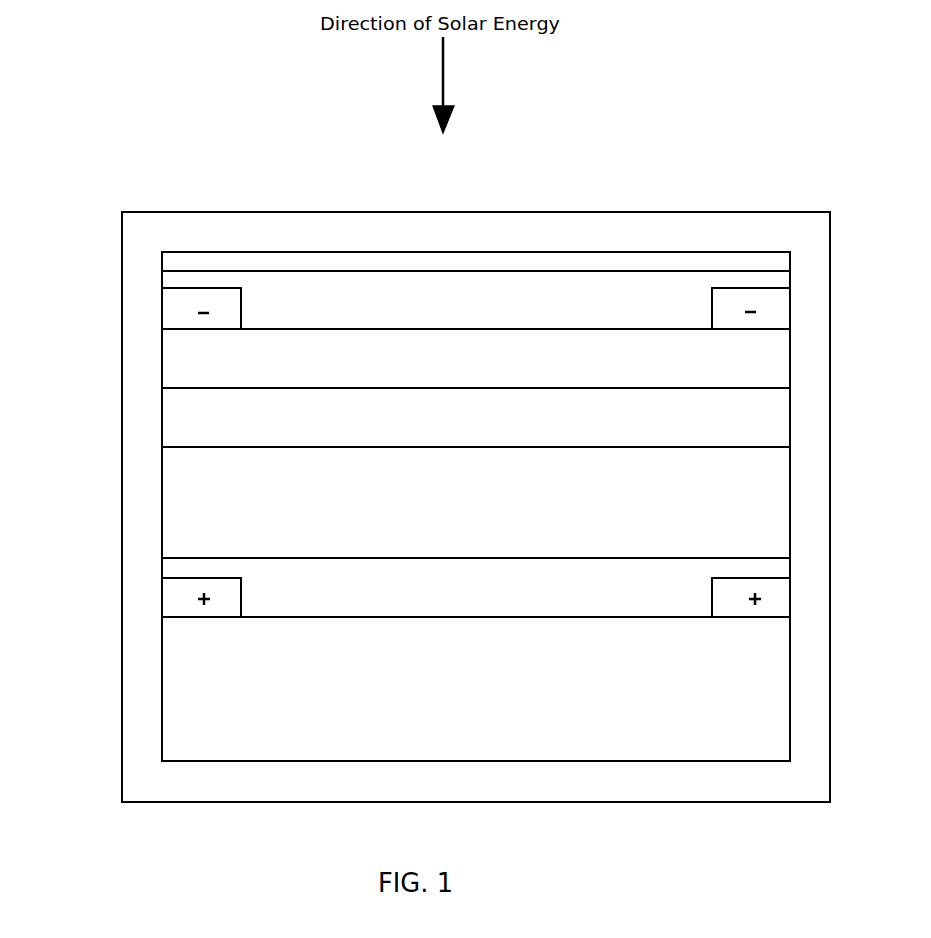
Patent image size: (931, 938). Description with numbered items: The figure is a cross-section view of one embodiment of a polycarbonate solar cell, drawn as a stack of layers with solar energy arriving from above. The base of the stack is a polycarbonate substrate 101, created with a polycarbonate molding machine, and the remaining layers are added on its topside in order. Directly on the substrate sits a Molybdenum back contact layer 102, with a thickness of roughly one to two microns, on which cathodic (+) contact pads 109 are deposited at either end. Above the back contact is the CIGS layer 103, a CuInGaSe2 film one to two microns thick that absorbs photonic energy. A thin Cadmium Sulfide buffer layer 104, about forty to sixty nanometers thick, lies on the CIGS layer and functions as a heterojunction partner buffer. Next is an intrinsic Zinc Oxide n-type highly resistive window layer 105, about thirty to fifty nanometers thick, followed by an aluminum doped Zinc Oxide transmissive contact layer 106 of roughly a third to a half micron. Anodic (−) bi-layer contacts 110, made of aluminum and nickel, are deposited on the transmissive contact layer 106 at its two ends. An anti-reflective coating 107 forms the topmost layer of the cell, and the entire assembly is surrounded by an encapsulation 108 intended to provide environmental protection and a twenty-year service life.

The polycarbonate substrate 101 is at (162, 742).
The Molybdenum back contact layer 102 is at (162, 567).
The CIGS layer 103 is at (162, 525).
The CdS buffer layer 104 is at (162, 436).
The i-ZnO window layer 105 is at (162, 375).
The ZnO:Al transmissive contact layer 106 is at (162, 285).
The anti-reflective coating 107 is at (162, 259).
The encapsulation 108 is at (122, 220).
The cathodic contact pads 109 is at (162, 605).
The anodic bi-layer contacts 110 is at (162, 321).